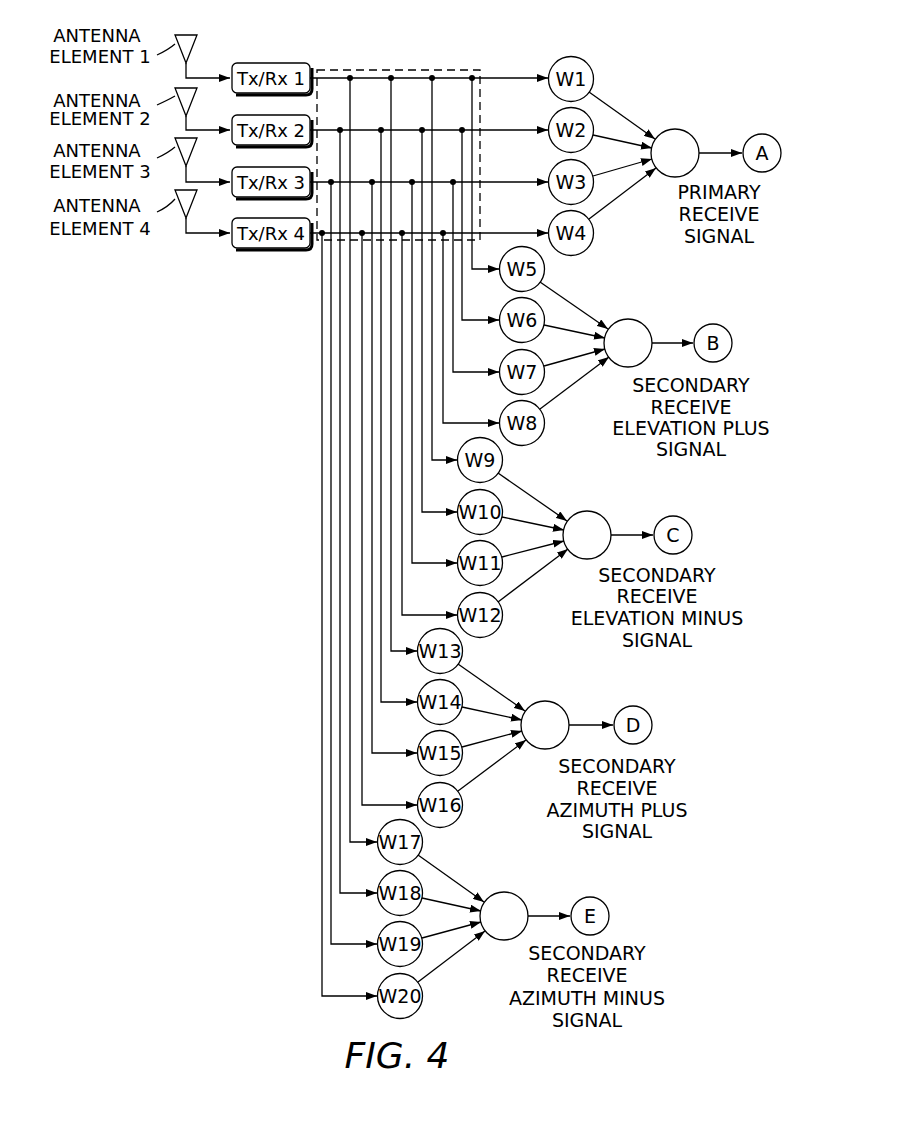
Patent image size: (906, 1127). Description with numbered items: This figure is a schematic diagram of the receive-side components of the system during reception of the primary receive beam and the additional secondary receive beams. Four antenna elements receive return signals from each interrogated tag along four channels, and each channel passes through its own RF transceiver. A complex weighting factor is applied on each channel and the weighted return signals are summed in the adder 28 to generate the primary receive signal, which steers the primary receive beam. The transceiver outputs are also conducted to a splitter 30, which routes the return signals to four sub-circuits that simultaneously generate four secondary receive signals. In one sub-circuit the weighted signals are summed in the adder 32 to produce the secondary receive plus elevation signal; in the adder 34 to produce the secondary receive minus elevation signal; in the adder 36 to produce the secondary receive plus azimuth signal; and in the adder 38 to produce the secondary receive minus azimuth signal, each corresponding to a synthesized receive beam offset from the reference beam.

The adder 28 is at (677, 129).
The splitter 30 is at (411, 60).
The adder 32 is at (630, 320).
The adder 34 is at (589, 512).
The adder 36 is at (549, 702).
The adder 38 is at (509, 893).